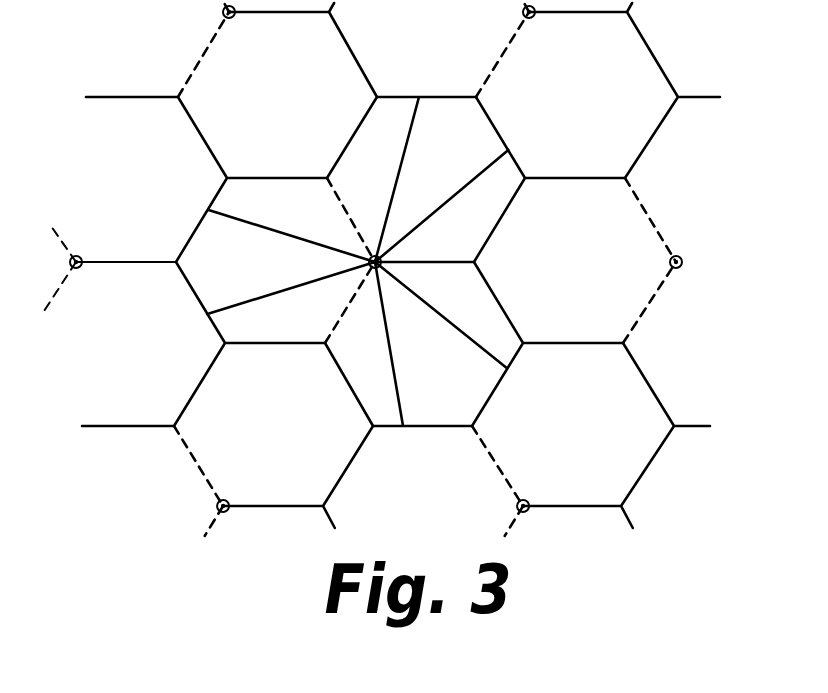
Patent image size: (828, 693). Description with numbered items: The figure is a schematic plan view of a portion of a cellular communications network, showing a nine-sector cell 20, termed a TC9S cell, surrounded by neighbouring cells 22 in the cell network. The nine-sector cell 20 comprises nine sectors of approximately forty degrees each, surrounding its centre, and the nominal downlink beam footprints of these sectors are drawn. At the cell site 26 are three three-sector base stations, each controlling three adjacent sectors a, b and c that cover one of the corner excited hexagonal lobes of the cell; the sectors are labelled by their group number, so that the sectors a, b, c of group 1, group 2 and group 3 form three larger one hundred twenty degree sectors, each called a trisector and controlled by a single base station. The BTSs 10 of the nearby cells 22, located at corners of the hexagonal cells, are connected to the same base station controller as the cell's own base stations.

The BTS 10 is at (713, 280).
The nine-sector cell 20 is at (503, 215).
The neighbouring cells 22 is at (583, 481).
The cell site 26 is at (476, 263).
The trisector 1 sectors (a1, b1, c1) 1 is at (417, 179).
The trisector 2 sectors (a2, b2, c2) 2 is at (416, 343).
The trisector 3 sectors (a3, b3, c3) 3 is at (288, 265).